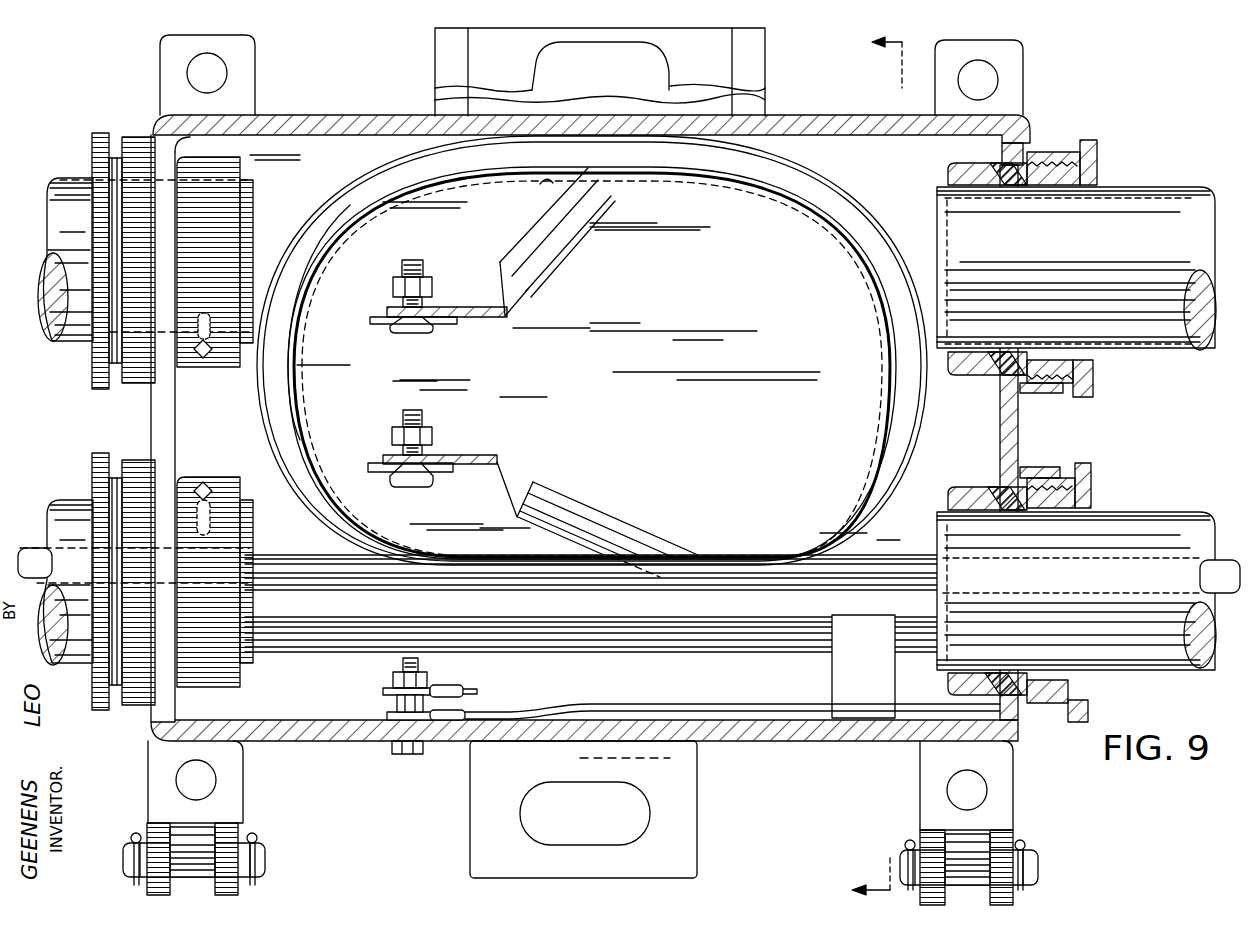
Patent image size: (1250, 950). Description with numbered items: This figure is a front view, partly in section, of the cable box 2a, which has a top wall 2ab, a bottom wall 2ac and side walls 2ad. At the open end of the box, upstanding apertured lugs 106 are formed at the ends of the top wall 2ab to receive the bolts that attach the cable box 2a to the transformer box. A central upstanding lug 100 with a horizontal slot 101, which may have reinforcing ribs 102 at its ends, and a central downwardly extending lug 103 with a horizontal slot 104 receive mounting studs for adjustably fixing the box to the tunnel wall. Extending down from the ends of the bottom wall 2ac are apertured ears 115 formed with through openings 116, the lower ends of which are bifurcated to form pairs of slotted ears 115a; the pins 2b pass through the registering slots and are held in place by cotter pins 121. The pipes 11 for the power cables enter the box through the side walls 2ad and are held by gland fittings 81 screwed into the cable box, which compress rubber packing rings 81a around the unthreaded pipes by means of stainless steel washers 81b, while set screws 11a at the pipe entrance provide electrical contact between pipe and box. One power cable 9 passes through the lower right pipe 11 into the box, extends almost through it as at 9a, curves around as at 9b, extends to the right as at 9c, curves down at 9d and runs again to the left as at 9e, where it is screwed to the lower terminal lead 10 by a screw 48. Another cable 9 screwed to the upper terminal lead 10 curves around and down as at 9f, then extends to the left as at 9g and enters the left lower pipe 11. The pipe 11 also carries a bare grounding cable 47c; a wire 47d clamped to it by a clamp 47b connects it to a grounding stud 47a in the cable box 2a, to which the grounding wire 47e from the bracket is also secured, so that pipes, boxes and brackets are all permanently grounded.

The cable box 2a is at (631, 429).
The top wall 2ab is at (293, 117).
The bottom wall 2ac is at (331, 742).
The side walls 2ad is at (152, 414).
The pins 2b is at (267, 858).
The power cables 9 is at (588, 356).
The cable portion extending through box 9a is at (830, 602).
The curved cable portion 9b is at (300, 417).
The rightward cable portion 9c is at (547, 182).
The downward cable curve 9d is at (868, 208).
The leftward cable portion 9e is at (661, 537).
The curved cable portion from upper terminal 9f is at (867, 293).
The leftward cable portion to pipe 9g is at (340, 598).
The primary leads 10 is at (372, 462).
The pipes 11 is at (63, 180).
The set screws 11a is at (207, 360).
The grounding stud 47a is at (430, 662).
The clamp 47b is at (863, 712).
The grounding cable 47c is at (328, 650).
The wire 47d is at (762, 712).
The grounding wire 47e is at (480, 690).
The screw 48 is at (428, 333).
The gland fittings 81 is at (97, 133).
The rubber packing rings 81a is at (1020, 158).
The stainless steel washers 81b is at (1030, 477).
The upstanding lug 100 is at (603, 72).
The horizontal slot 101 is at (547, 63).
The reinforcing ribs 102 is at (440, 78).
The downwardly extending lug 103 is at (617, 825).
The horizontal slot 104 is at (597, 833).
The upstanding apertured lugs 106 is at (168, 55).
The apertured ears 115 is at (619, 828).
The slotted ears 115a is at (933, 897).
The through openings 116 is at (187, 773).
The cotter pins 121 is at (910, 847).